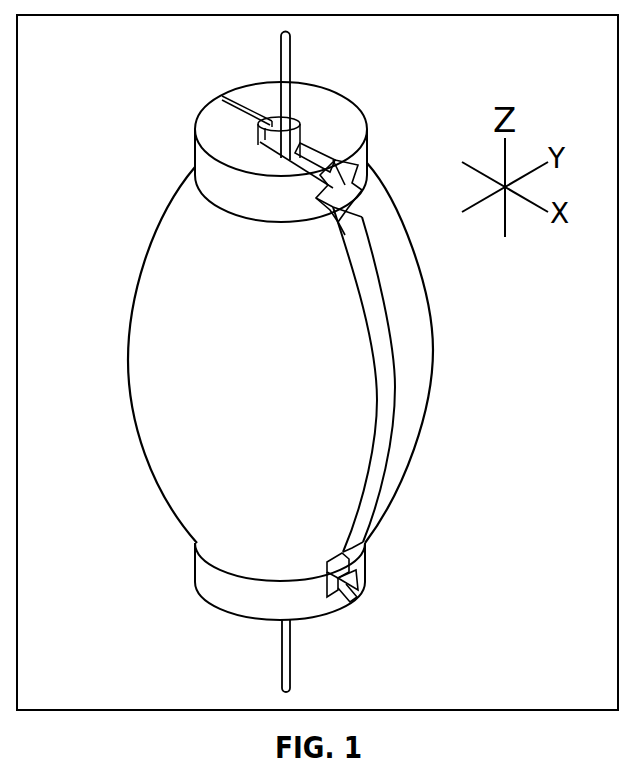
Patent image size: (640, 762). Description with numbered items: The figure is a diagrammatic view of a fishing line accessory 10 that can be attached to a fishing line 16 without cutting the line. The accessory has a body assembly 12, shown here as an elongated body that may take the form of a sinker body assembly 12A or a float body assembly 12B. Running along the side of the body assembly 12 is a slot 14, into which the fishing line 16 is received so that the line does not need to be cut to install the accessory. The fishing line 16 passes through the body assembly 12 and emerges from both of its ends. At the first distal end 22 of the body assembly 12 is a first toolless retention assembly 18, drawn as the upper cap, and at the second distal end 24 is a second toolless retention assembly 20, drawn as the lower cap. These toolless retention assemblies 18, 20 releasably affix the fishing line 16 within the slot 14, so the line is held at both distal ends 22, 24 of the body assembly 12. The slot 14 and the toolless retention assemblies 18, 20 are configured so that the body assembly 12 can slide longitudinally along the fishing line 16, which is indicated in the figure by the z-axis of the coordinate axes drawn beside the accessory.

The fishing line accessory 10 is at (98, 94).
The body assembly 12 is at (235, 360).
The sinker body assembly 12A is at (155, 468).
The float body assembly 12B is at (155, 468).
The slot 14 is at (382, 397).
The fishing line 16 is at (291, 44).
The first toolless retention assembly 18 is at (200, 160).
The second toolless retention assembly 20 is at (213, 583).
The first distal end 22 is at (323, 227).
The second distal end 24 is at (368, 542).